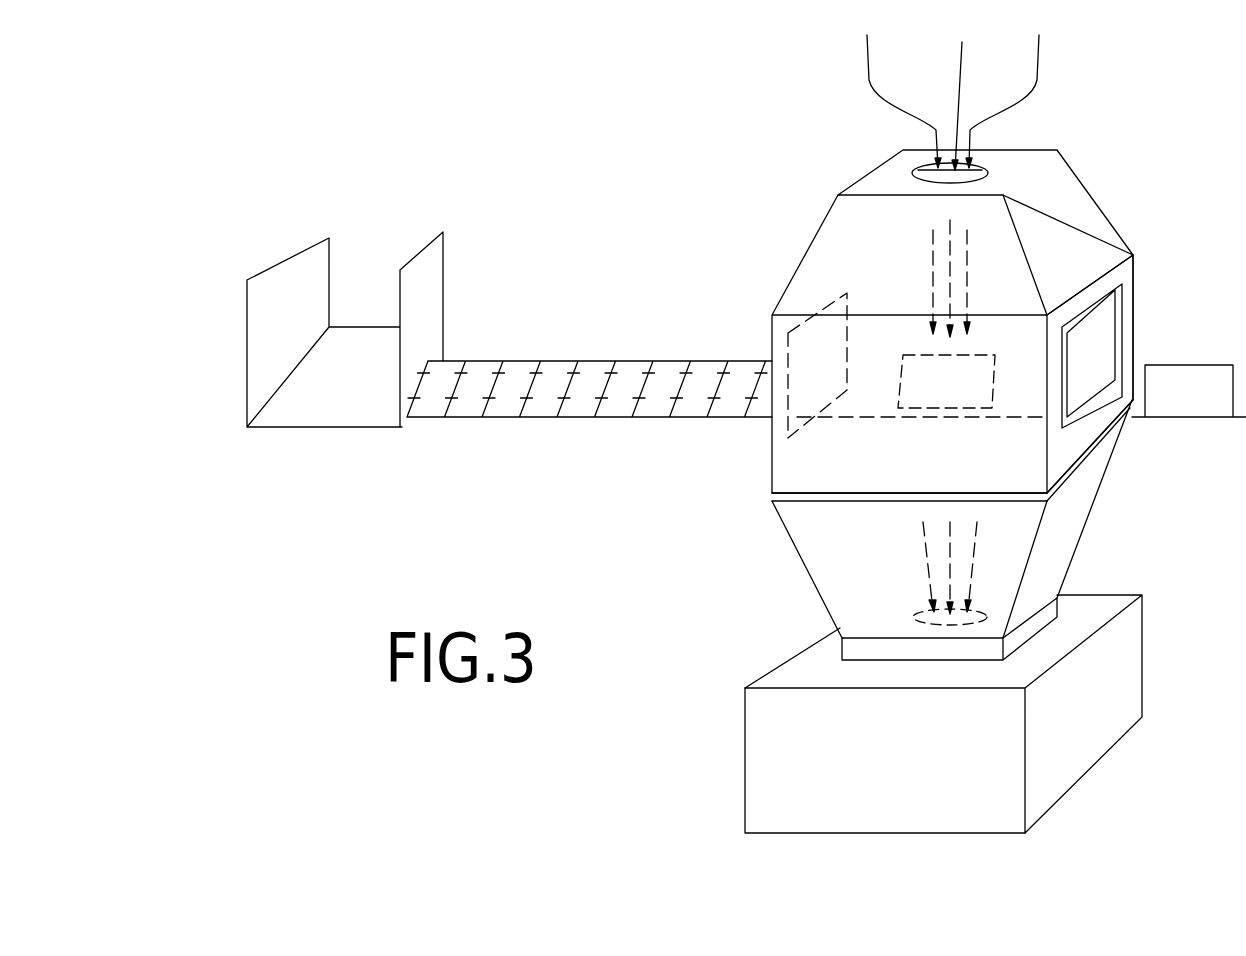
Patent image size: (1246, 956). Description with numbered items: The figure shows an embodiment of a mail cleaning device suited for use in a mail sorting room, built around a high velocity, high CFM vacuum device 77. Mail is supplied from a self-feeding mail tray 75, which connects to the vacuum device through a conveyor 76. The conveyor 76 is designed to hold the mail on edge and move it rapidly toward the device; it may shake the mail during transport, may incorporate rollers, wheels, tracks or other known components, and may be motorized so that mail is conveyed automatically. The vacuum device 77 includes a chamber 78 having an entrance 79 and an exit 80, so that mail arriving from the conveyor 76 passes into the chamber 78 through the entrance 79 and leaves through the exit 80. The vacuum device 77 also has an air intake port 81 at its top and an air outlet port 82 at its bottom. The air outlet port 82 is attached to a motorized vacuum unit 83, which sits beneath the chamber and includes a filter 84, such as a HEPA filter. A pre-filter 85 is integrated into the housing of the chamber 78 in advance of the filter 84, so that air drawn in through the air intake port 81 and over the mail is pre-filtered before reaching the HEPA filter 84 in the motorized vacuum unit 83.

The self-feeding mail tray 75 is at (272, 272).
The conveyor 76 is at (498, 417).
The vacuum device 77 is at (1075, 208).
The chamber 78 is at (1125, 277).
The entrance 79 is at (808, 320).
The exit 80 is at (1097, 318).
The air intake port 81 is at (980, 163).
The air outlet port 82 is at (930, 613).
The motorized vacuum unit 83 is at (1113, 667).
The filter 84 is at (815, 798).
The pre-filter 85 is at (772, 495).